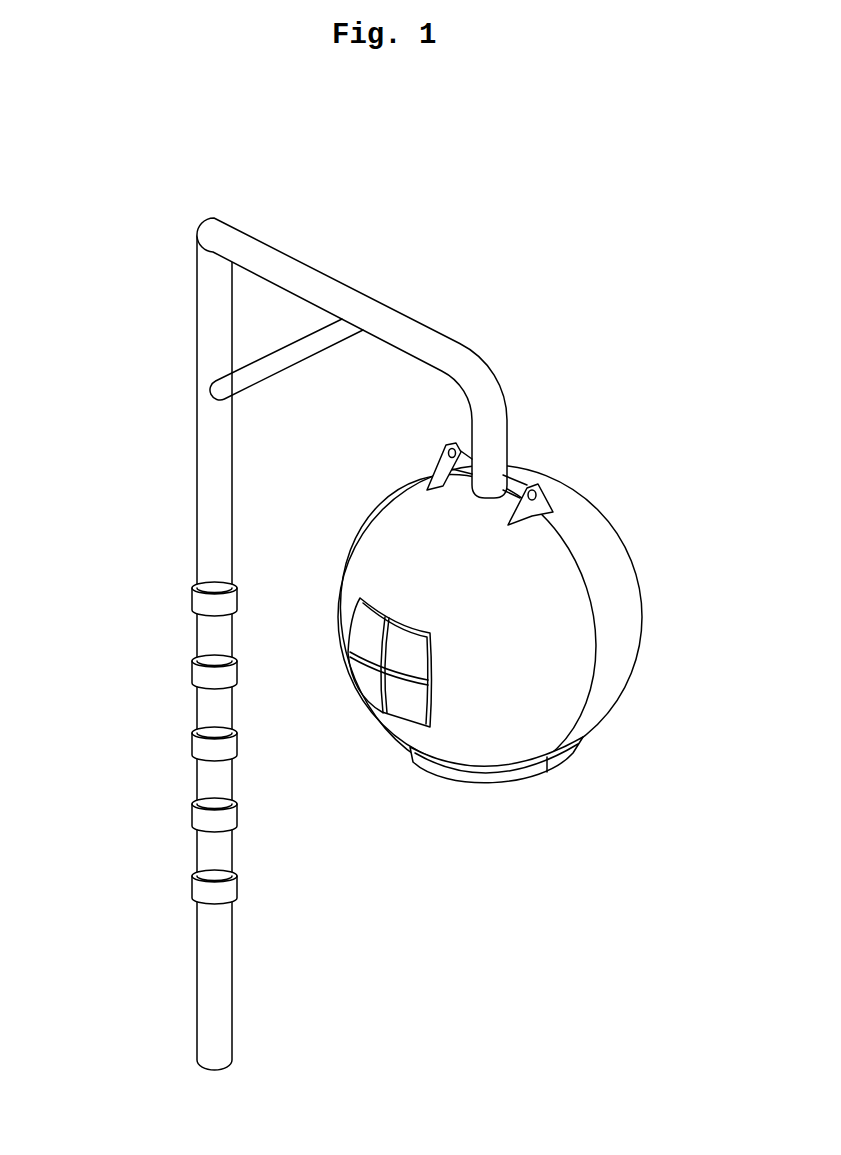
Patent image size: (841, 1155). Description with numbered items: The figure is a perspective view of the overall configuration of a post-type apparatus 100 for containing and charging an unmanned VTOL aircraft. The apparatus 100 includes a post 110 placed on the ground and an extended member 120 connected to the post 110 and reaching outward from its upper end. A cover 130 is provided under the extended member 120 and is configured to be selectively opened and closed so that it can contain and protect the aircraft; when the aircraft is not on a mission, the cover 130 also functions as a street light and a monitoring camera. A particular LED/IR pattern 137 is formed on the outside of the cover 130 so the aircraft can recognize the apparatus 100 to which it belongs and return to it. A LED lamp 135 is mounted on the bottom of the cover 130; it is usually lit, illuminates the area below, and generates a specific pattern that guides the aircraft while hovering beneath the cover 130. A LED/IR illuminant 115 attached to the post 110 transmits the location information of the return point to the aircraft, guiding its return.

The apparatus for containing and charging the unmanned VTOL aircraft 100 is at (156, 279).
The post 110 is at (205, 475).
The LED/IR illuminant 115 is at (197, 600).
The extended member 120 is at (283, 265).
The cover 130 is at (503, 668).
The LED lamp 135 is at (510, 778).
The LED/IR pattern 137 is at (413, 653).